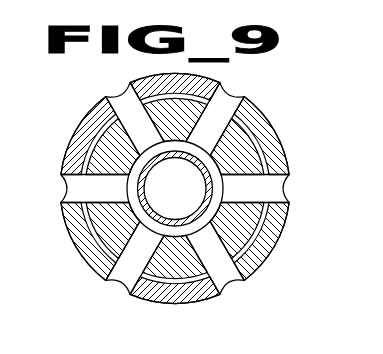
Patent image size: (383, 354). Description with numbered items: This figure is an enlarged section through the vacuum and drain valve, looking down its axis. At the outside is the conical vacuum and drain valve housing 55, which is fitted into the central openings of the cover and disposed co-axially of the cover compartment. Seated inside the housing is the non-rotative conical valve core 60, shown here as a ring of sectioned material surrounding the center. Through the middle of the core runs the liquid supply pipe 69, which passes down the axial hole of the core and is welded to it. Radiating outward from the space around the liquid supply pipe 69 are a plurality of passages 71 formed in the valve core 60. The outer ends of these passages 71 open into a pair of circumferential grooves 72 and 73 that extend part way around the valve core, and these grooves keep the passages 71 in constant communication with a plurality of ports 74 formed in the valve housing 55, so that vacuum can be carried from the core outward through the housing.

The vacuum and drain valve housing 55 is at (66, 232).
The valve core 60 is at (172, 278).
The liquid supply pipe 69 is at (203, 189).
The passages 71 is at (121, 101).
The circumferential groove 72 is at (248, 231).
The circumferential groove 73 is at (98, 144).
The ports 74 is at (118, 98).